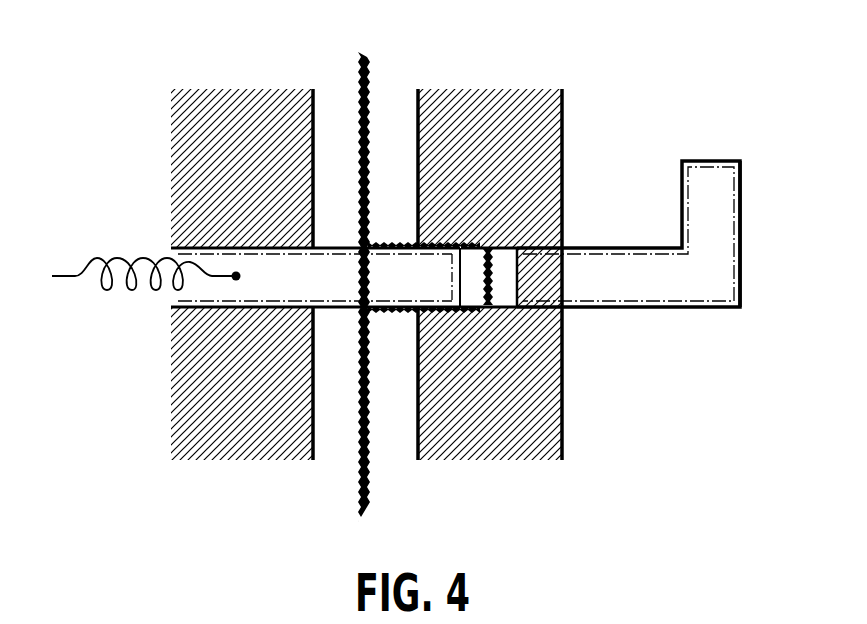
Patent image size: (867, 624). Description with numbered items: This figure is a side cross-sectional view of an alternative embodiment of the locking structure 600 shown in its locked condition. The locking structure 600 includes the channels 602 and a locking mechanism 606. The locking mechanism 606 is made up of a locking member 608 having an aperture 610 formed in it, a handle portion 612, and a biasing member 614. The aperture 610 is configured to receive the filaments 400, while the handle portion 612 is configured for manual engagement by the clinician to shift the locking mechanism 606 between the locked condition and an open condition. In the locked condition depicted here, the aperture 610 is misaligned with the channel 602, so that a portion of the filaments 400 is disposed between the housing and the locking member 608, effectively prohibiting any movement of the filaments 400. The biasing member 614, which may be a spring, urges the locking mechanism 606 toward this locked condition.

The filaments 400 is at (372, 73).
The locking structure 600 is at (637, 161).
The channels 602 is at (332, 95).
The locking mechanism 606 is at (673, 232).
The locking member 608 is at (599, 248).
The aperture 610 is at (510, 300).
The handle portion 612 is at (742, 245).
The biasing member 614 is at (92, 251).